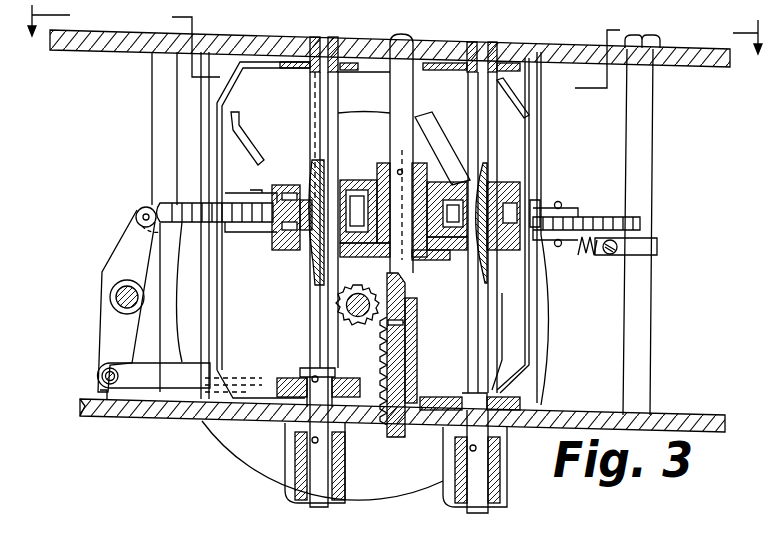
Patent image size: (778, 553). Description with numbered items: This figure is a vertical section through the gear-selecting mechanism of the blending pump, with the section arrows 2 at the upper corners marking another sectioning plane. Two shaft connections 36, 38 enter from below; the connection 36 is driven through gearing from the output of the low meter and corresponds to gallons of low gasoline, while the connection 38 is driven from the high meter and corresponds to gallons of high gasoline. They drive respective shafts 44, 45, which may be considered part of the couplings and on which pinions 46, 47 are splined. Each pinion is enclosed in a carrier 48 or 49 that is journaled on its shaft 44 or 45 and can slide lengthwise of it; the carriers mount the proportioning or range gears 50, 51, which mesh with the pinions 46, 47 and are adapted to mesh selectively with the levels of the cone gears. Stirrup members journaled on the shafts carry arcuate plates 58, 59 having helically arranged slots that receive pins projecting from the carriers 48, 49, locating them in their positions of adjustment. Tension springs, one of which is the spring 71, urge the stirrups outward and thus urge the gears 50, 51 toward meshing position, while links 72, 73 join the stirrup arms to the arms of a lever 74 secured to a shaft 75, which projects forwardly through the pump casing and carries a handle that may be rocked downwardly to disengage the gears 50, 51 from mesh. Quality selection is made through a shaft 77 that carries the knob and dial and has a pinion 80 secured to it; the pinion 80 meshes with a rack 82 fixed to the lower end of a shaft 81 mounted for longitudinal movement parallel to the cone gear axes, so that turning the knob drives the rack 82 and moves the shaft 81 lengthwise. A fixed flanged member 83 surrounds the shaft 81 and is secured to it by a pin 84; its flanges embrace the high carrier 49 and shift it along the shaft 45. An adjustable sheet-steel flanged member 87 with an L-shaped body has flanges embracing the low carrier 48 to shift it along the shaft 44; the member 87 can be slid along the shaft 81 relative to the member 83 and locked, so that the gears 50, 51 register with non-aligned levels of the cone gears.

The section line 2- 2 is at (395, 48).
The shaft connection 36 is at (310, 508).
The shaft connection 38 is at (470, 512).
The shaft 44 is at (318, 342).
The shaft 45 is at (478, 339).
The pinion 46 is at (300, 178).
The pinion 47 is at (520, 200).
The carrier 48 is at (297, 250).
The carrier 49 is at (502, 300).
The proportioning gear 50 is at (219, 235).
The proportioning gear 51 is at (602, 217).
The arcuate plate 58 is at (282, 105).
The arcuate plate 59 is at (510, 132).
The tension spring 71 is at (590, 255).
The link 72 is at (166, 390).
The link 73 is at (190, 226).
The lever 74 is at (142, 242).
The shaft 75 is at (122, 305).
The shaft 77 is at (340, 308).
The pinion 80 is at (342, 300).
The shaft 81 is at (400, 132).
The rack 82 is at (382, 361).
The fixed flanged member 83 is at (420, 256).
The pin 84 is at (54, 543).
The adjustable flanged member 87 is at (363, 180).